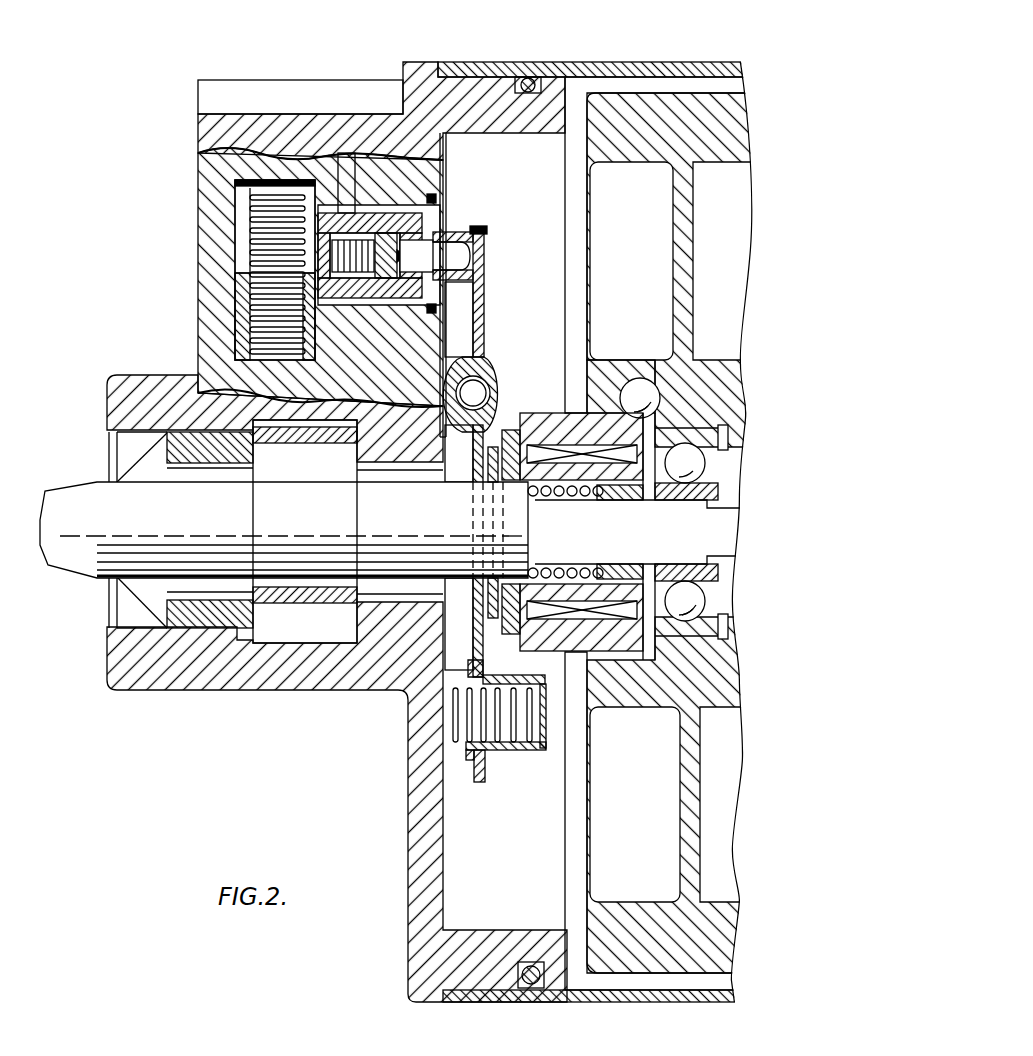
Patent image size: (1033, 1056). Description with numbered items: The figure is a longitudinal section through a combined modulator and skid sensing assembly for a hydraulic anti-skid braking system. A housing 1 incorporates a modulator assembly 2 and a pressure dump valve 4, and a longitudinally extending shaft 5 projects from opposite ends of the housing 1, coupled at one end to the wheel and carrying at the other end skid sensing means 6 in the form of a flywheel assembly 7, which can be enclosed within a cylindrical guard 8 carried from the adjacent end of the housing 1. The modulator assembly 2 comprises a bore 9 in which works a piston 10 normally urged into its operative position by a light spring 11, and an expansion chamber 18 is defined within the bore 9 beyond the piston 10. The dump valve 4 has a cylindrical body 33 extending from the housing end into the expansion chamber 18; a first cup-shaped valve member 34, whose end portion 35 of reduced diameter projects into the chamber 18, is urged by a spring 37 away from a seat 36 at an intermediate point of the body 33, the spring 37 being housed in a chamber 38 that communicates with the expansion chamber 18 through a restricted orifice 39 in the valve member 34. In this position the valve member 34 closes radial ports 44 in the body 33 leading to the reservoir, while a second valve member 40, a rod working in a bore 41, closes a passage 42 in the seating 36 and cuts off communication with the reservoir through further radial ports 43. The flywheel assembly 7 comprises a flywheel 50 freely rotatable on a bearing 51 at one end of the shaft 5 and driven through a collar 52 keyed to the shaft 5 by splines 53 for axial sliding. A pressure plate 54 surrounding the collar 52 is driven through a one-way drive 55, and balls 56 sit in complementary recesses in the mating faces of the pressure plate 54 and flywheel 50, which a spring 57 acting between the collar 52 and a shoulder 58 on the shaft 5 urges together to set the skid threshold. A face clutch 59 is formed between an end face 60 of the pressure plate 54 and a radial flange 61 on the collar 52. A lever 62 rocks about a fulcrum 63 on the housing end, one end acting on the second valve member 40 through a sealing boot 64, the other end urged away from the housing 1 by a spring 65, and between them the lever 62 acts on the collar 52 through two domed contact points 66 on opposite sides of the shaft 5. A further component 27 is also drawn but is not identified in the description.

The housing 1 is at (398, 672).
The modulator assembly 2 is at (238, 351).
The pressure dump valve 4 is at (476, 233).
The shaft 5 is at (152, 548).
The skid sensing means 6 is at (659, 384).
The flywheel assembly 7 is at (584, 412).
The cylindrical guard 8 is at (638, 62).
The bore 9 is at (240, 292).
The piston 10 is at (245, 392).
The light spring 11 is at (250, 247).
The expansion chamber 18 is at (250, 268).
The gear 27 is at (288, 548).
The cylindrical body 33 is at (406, 240).
The first cup-shaped valve member 34 is at (332, 228).
The end portion of reduced diameter 35 is at (294, 162).
The seat 36 is at (430, 194).
The spring 37 is at (380, 218).
The chamber 38 is at (372, 292).
The restricted orifice 39 is at (250, 213).
The second valve member 40 is at (455, 259).
The bore 41 is at (478, 233).
The passage 42 is at (366, 278).
The further radial ports 43 is at (440, 230).
The radial ports 44 is at (347, 210).
The flywheel 50 is at (690, 210).
The bearing 51 is at (704, 606).
The collar 52 is at (613, 493).
The splines 53 is at (627, 572).
The pressure plate 54 is at (612, 708).
The one-way drive 55 is at (531, 450).
The balls 56 is at (590, 426).
The spring 57 is at (580, 572).
The shoulder 58 is at (500, 556).
The face clutch 59 is at (480, 641).
The end face 60 is at (541, 650).
The radial flange 61 is at (478, 636).
The lever 62 is at (480, 353).
The fulcrum 63 is at (488, 396).
The sealing boot 64 is at (484, 302).
The spring 65 is at (476, 758).
The domed contact points 66 is at (473, 491).